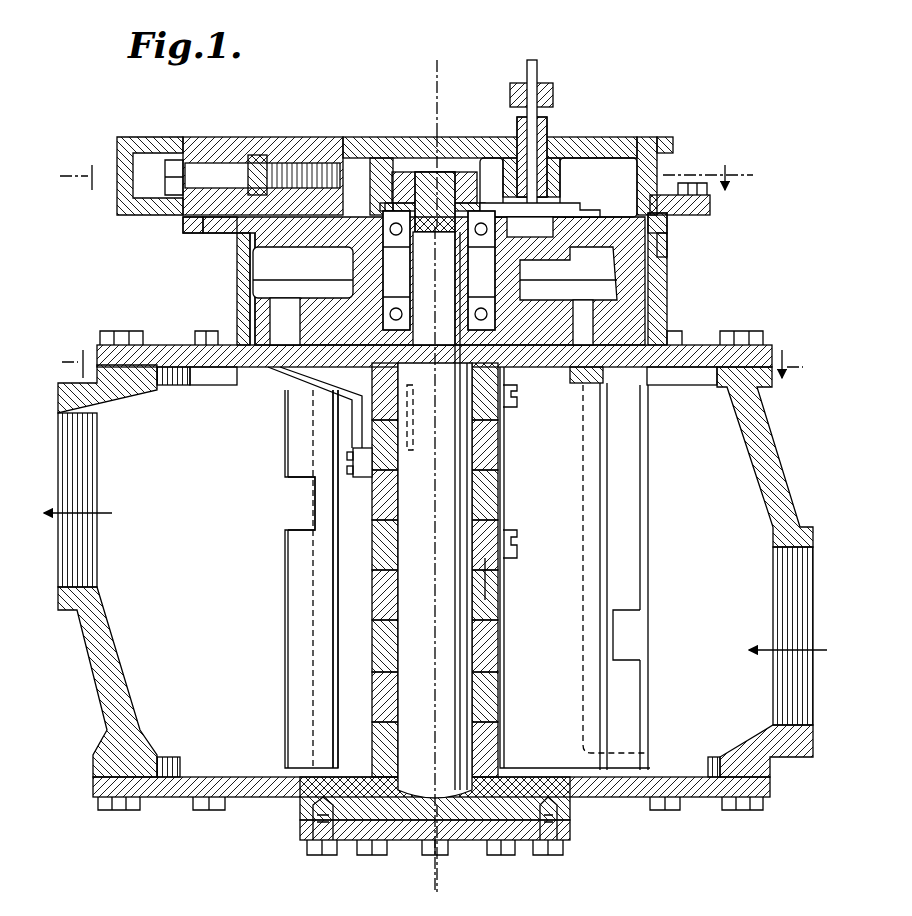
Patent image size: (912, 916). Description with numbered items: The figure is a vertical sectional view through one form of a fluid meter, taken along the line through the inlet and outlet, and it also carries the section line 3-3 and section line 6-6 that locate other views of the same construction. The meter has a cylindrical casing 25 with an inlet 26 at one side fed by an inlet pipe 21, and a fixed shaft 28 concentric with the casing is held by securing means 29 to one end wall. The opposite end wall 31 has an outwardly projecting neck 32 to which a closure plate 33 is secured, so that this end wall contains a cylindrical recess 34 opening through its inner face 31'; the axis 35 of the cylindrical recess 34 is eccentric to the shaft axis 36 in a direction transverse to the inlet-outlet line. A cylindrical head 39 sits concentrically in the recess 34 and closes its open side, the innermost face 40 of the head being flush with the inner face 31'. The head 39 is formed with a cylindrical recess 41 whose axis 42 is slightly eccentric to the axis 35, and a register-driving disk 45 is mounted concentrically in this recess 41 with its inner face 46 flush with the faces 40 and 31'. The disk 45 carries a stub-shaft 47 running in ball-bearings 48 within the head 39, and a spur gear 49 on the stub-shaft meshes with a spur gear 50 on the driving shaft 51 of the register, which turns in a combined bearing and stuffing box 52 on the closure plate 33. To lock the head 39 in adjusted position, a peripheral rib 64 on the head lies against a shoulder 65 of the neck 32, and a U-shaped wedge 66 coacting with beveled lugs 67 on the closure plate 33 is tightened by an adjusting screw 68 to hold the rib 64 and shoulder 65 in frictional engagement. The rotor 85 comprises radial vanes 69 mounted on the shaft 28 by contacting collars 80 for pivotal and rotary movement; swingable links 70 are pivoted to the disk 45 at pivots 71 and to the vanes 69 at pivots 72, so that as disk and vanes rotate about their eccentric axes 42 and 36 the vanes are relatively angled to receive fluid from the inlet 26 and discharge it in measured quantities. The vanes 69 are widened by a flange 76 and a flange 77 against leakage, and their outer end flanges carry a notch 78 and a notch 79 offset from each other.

The section line 3- 3 is at (404, 177).
The section line 6- 6 is at (427, 364).
The inlet pipe 21 is at (85, 478).
The cylindrical casing 25 is at (774, 440).
The inlet 26 is at (795, 594).
The fixed shaft 28 is at (445, 493).
The securing means 29 is at (308, 842).
The end wall 31 is at (434, 339).
The inner face 31' is at (191, 394).
The neck 32 is at (250, 272).
The closure plate 33 is at (675, 143).
The cylindrical recess 34 is at (237, 299).
The axis of cylindrical recess 35 is at (443, 103).
The shaft axis 36 is at (441, 877).
The cylindrical head 39 is at (593, 247).
The innermost face of head 40 is at (253, 368).
The cylindrical recess 41 is at (652, 300).
The axis of recess 42 is at (432, 103).
The register-driving disk 45 is at (527, 372).
The inner face of disk 46 is at (530, 417).
The stub-shaft 47 is at (413, 145).
The ball-bearings 48 is at (380, 245).
The spur gear 49 is at (398, 205).
The spur gear 50 is at (577, 208).
The driving shaft 51 is at (536, 112).
The combined bearing and stuffing box 52 is at (548, 170).
The peripheral rib 64 is at (200, 230).
The shoulder 65 is at (230, 233).
The U-shaped wedge 66 is at (367, 160).
The beveled lugs 67 is at (450, 160).
The adjusting screw 68 is at (290, 160).
The radial vanes 69 is at (340, 616).
The swingable links 70 is at (293, 398).
The pivots 71 is at (285, 300).
The pivots 72 is at (348, 441).
The flange 76 is at (303, 576).
The flange 77 is at (618, 528).
The notch 78 is at (297, 511).
The notch 79 is at (627, 644).
The collars 80 is at (487, 561).
The rotor 85 is at (377, 718).